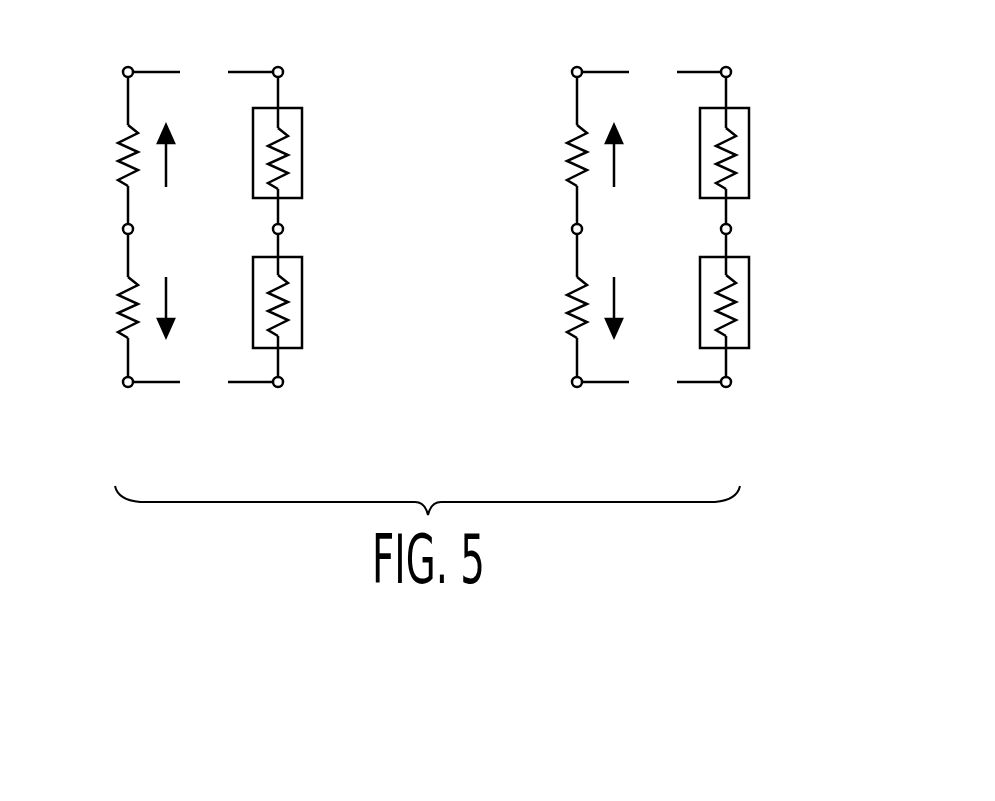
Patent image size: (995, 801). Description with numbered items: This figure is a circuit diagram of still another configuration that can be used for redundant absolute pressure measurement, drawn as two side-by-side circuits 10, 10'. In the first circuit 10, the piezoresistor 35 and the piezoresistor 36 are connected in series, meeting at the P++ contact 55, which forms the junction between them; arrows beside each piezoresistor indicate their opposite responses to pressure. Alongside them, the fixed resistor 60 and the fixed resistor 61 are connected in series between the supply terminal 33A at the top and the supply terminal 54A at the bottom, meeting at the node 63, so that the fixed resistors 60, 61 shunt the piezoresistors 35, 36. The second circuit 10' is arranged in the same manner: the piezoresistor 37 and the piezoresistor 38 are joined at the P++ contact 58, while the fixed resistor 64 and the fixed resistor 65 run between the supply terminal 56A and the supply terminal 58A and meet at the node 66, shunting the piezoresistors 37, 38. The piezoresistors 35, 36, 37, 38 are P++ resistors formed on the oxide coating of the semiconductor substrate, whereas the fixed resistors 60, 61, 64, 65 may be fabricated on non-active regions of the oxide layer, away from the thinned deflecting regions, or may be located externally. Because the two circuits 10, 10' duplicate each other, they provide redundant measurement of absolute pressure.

The bridge circuit 10 is at (211, 226).
The second bridge circuit 10' is at (650, 226).
The supply terminal 33A is at (250, 62).
The supply terminal 54A is at (213, 388).
The supply terminal 56A is at (695, 62).
The supply terminal 58A is at (673, 392).
The piezoresistor 35 is at (118, 172).
The piezoresistor 36 is at (118, 306).
The piezoresistor 37 is at (567, 172).
The piezoresistor 38 is at (567, 306).
The P++ contact 55 is at (123, 229).
The P++ contact 58 is at (572, 229).
The fixed resistor 60 is at (286, 160).
The fixed resistor 61 is at (286, 312).
The node 63 is at (284, 229).
The fixed resistor 64 is at (736, 150).
The fixed resistor 65 is at (736, 312).
The node 66 is at (732, 229).